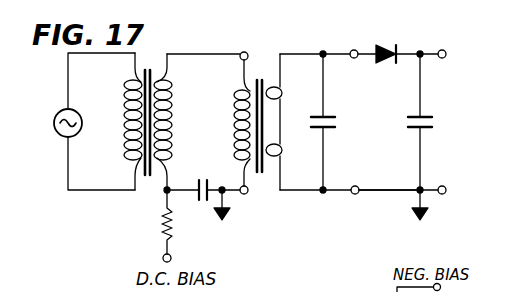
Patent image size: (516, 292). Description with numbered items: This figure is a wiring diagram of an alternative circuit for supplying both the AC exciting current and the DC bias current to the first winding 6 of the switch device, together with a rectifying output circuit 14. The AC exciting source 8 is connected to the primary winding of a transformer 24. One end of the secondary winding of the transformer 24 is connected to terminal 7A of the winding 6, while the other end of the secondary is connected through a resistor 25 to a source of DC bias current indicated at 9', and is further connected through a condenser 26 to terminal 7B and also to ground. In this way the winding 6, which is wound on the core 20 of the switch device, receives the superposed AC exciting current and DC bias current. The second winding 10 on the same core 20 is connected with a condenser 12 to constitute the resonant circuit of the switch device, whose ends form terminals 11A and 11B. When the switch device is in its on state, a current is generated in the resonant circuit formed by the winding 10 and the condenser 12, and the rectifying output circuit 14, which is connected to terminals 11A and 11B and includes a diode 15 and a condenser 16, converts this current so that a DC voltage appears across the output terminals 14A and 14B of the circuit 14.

The AC exciting source 8 is at (60, 137).
The transformer 24 is at (152, 68).
The resistor 25 is at (163, 222).
The source of DC bias current 9' is at (144, 254).
The condenser 26 is at (203, 179).
The terminal 7A is at (244, 51).
The terminal 7B is at (246, 195).
The first winding 6 is at (234, 97).
The magnetic core 20 is at (260, 74).
The winding 10 is at (283, 152).
The terminal 11A is at (354, 50).
The terminal 11B is at (357, 186).
The condenser 12 is at (334, 118).
The diode 15 is at (383, 50).
The condenser 16 is at (408, 125).
The output terminal 14A is at (456, 43).
The output terminal 14B is at (452, 178).
The rectifying output circuit 14 is at (388, 200).